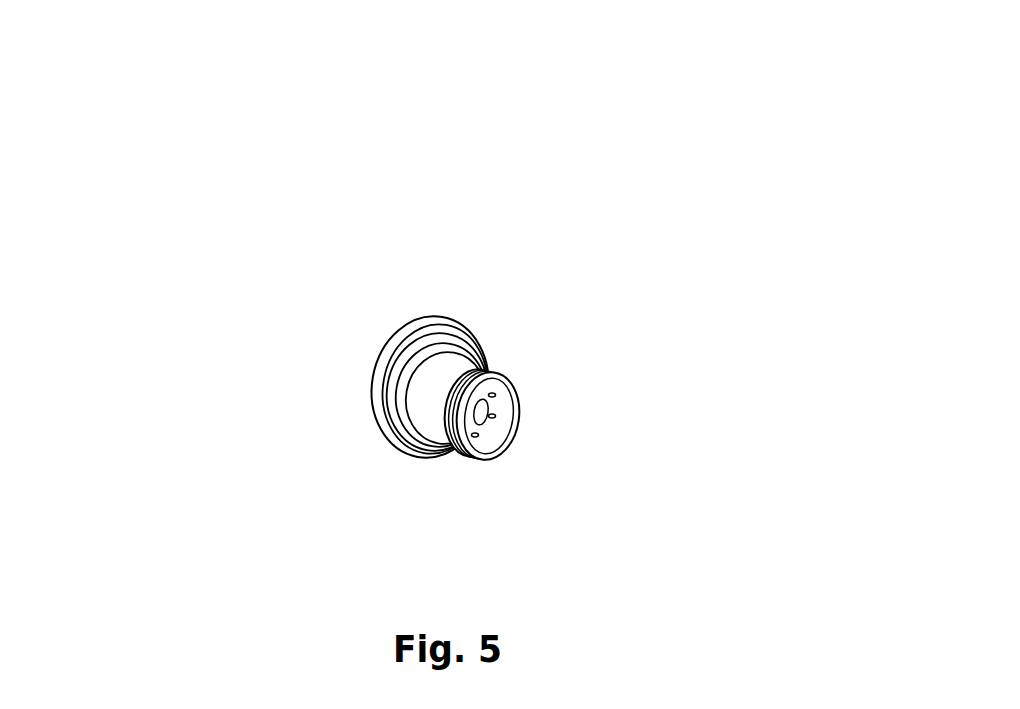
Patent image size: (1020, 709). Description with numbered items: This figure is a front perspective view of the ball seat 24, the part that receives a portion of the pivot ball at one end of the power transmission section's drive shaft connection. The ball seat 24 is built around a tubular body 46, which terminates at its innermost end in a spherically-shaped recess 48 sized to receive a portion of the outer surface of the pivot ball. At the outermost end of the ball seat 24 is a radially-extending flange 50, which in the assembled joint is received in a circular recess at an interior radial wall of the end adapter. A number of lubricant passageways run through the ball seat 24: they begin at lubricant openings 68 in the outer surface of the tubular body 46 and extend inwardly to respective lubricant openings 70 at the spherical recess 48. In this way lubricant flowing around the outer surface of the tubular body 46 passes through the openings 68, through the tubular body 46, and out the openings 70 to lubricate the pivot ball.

The ball seat 24 is at (358, 303).
The tubular body 46 is at (433, 397).
The spherically-shaped recess 48 is at (490, 445).
The radially-extending flange 50 is at (380, 412).
The lubricant openings 68 is at (448, 408).
The lubricant openings 70 is at (496, 393).